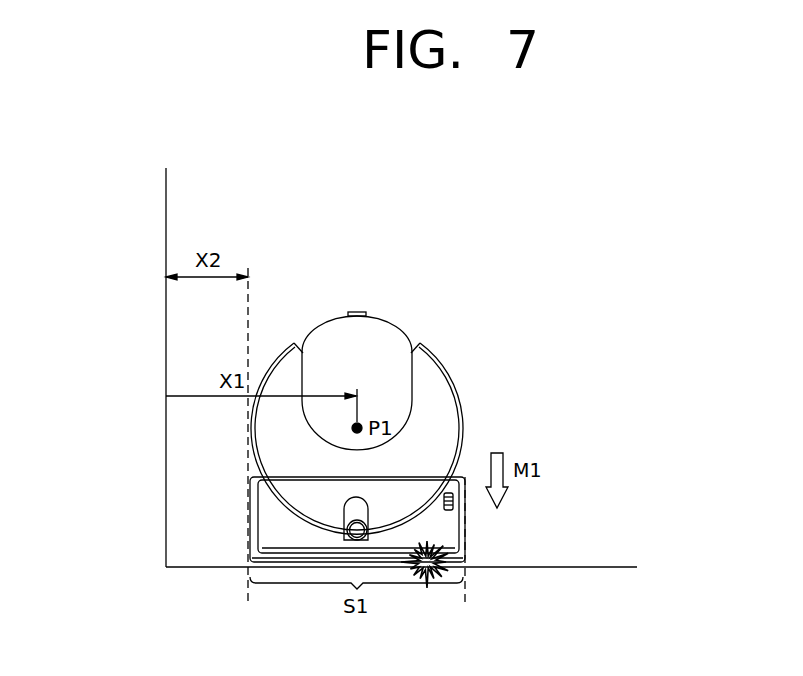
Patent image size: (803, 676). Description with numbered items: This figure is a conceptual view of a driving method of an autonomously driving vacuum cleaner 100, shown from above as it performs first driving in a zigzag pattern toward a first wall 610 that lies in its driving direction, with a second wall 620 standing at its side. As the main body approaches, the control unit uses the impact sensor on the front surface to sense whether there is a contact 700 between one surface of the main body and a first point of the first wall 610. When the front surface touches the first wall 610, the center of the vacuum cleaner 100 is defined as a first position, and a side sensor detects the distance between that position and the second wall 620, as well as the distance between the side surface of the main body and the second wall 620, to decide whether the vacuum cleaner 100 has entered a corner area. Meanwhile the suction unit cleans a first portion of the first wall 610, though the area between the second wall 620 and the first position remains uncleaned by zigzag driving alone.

The vacuum cleaner 100 is at (449, 337).
The second wall 620 is at (166, 241).
The first wall 610 is at (587, 568).
The contact 700 is at (445, 556).